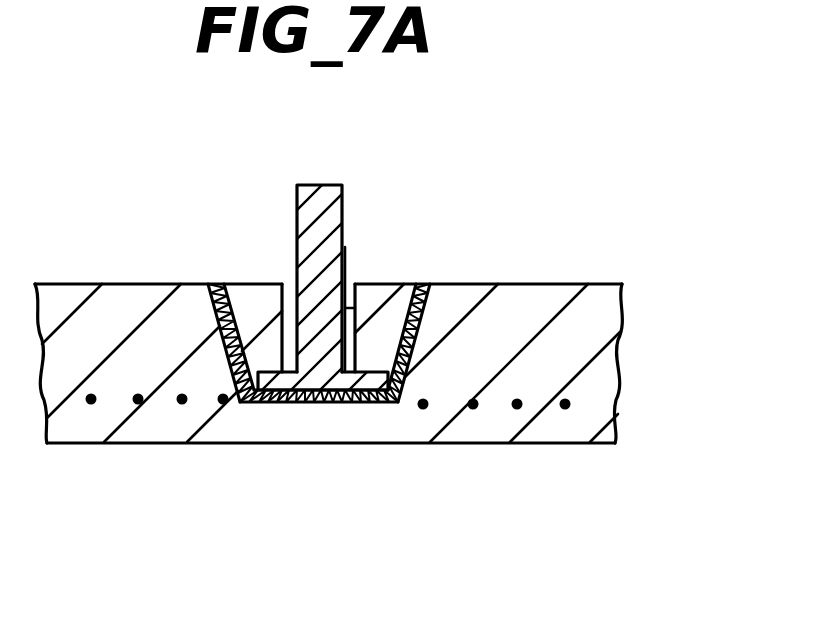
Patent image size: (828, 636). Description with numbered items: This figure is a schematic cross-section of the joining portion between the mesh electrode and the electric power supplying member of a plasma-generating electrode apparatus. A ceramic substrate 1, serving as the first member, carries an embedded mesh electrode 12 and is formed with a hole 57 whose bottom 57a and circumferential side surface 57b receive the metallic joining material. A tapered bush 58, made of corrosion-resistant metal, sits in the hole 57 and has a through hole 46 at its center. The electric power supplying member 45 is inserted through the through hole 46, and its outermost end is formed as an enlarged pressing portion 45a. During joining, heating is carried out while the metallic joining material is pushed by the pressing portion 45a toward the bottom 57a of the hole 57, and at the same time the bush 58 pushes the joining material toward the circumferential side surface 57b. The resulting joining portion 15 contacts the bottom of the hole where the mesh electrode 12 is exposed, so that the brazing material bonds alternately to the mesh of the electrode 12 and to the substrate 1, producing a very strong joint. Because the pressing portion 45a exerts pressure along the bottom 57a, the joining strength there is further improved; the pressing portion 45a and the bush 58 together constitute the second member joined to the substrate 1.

The substrate 1 is at (578, 360).
The mesh electrode 12 is at (473, 409).
The joining portion 15 is at (405, 380).
The electric power supplying member 45 is at (333, 213).
The enlarged pressing portion 45a is at (300, 374).
The through hole 46 is at (345, 247).
The hole 57 is at (237, 365).
The bottom of the hole 57a is at (344, 403).
The circumferential side surface of the hole 57b is at (413, 342).
The tapered bush 58 is at (272, 283).